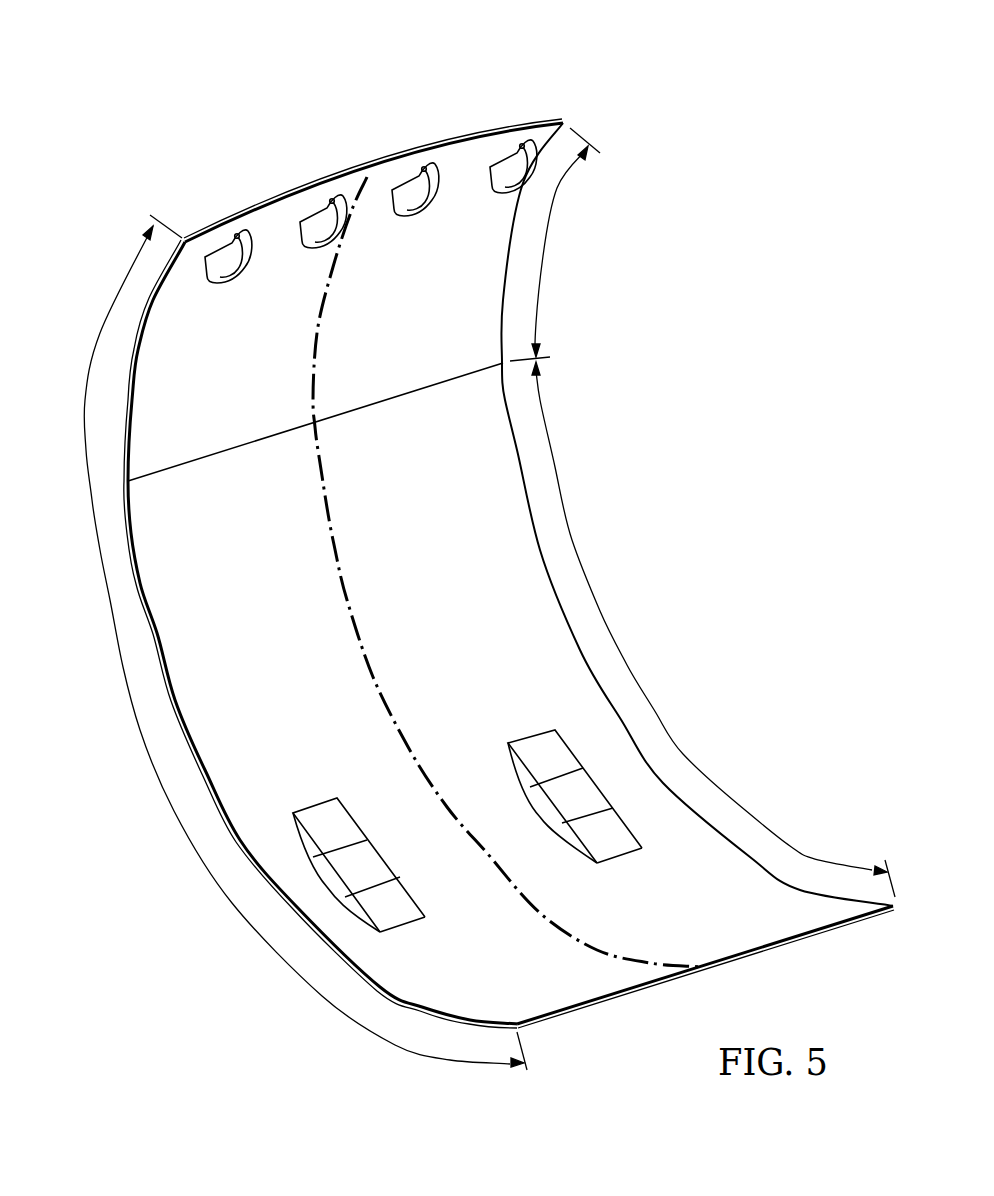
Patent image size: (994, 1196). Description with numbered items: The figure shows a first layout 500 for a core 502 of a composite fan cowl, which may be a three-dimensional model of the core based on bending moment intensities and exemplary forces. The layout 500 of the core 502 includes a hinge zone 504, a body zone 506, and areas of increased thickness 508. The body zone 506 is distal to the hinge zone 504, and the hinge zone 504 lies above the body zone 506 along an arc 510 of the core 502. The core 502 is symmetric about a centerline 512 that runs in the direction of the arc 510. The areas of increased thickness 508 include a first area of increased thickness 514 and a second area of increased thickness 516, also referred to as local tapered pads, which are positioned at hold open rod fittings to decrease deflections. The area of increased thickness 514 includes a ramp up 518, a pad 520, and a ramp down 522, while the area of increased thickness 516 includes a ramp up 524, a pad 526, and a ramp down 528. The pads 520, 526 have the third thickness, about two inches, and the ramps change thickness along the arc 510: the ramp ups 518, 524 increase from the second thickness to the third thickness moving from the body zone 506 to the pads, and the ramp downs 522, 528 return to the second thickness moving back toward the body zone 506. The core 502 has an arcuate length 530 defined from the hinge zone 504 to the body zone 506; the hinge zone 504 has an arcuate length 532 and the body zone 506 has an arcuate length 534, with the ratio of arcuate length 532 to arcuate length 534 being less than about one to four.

The layout 500 is at (150, 76).
The core 502 is at (196, 162).
The hinge zone 504 is at (280, 232).
The body zone 506 is at (238, 480).
The areas of increased thickness 508 is at (315, 685).
The arc 510 is at (131, 573).
The centerline 512 is at (347, 580).
The area of increased thickness 514 is at (292, 760).
The area of increased thickness 516 is at (527, 708).
The ramp up 518 is at (327, 810).
The pad 520 is at (377, 863).
The ramp down 522 is at (398, 918).
The ramp up 524 is at (530, 748).
The pad 526 is at (565, 798).
The ramp down 528 is at (612, 847).
The arcuate length 530 is at (122, 670).
The arcuate length 532 is at (547, 247).
The arcuate length 534 is at (573, 543).